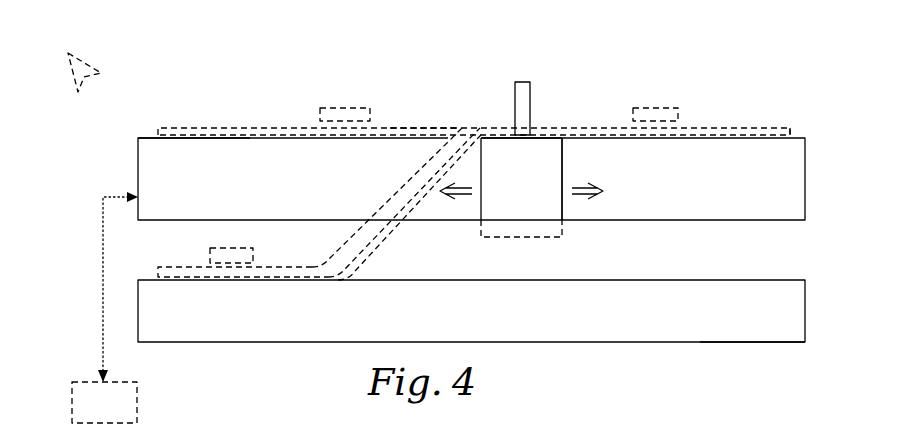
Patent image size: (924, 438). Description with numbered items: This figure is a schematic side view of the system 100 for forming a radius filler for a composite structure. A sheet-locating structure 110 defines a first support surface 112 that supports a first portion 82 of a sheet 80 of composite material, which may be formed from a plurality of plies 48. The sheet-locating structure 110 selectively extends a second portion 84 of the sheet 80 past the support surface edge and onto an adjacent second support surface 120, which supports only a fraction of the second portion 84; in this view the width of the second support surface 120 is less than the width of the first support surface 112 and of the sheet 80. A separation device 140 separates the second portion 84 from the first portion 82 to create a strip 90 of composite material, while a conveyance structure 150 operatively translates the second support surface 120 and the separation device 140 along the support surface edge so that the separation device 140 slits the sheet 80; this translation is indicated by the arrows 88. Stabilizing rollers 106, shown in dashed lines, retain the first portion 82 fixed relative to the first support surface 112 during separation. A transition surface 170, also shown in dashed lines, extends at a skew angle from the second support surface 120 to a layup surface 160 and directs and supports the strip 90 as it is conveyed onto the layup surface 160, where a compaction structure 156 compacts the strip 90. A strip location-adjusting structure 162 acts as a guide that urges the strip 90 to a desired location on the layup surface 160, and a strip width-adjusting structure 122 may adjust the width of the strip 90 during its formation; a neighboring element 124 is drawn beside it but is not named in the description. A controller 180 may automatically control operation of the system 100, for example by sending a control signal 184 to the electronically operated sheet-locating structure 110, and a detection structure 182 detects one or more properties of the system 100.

The system 100 is at (728, 42).
The sheet-locating structure 110 is at (132, 175).
The first support surface 112 is at (138, 138).
The second support surface 120 is at (553, 138).
The strip width-adjusting structure 122 is at (553, 157).
The side wall surface 124 is at (570, 177).
The sheet 80 is at (207, 122).
The first portion 82 is at (270, 128).
The second portion 84 is at (495, 128).
The plies 48 is at (457, 128).
The stabilizing rollers 106 is at (340, 108).
The separation device 140 is at (537, 94).
The conveyance structure 150 is at (572, 241).
The arrows 88 is at (465, 198).
The transition surface 170 is at (413, 200).
The strip 90 is at (187, 267).
The compaction structure 156 is at (250, 248).
The layup surface 160 is at (750, 280).
The strip location-adjusting structure 162 is at (717, 330).
The control signal 184 is at (95, 328).
The controller 180 is at (145, 397).
The detection structure 182 is at (88, 56).